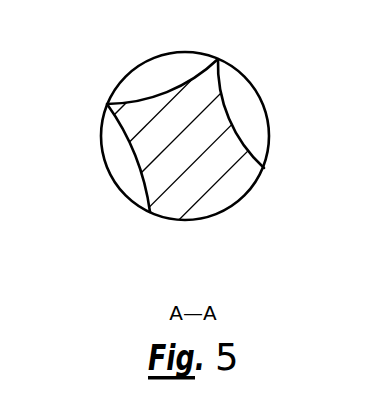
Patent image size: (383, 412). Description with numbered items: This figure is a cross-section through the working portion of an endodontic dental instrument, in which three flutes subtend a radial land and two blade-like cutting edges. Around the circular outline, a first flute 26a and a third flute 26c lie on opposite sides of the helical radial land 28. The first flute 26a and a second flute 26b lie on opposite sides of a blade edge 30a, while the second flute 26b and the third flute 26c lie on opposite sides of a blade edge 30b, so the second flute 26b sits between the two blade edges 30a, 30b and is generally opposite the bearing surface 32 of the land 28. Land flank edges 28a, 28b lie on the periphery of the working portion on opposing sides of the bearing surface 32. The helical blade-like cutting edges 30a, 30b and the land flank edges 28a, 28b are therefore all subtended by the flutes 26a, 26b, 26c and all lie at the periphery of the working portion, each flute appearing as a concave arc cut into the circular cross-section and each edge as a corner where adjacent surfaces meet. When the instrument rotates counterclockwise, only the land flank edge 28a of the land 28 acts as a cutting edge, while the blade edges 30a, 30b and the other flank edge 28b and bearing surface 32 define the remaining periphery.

The first flute 26a is at (248, 103).
The second flute 26b is at (157, 70).
The third flute 26c is at (120, 166).
The helical radial land 28 is at (218, 205).
The land flank edge 28a is at (264, 168).
The land flank edge 28b is at (150, 209).
The blade edge 30a is at (218, 60).
The blade edge 30b is at (107, 104).
The bearing surface 32 is at (253, 189).